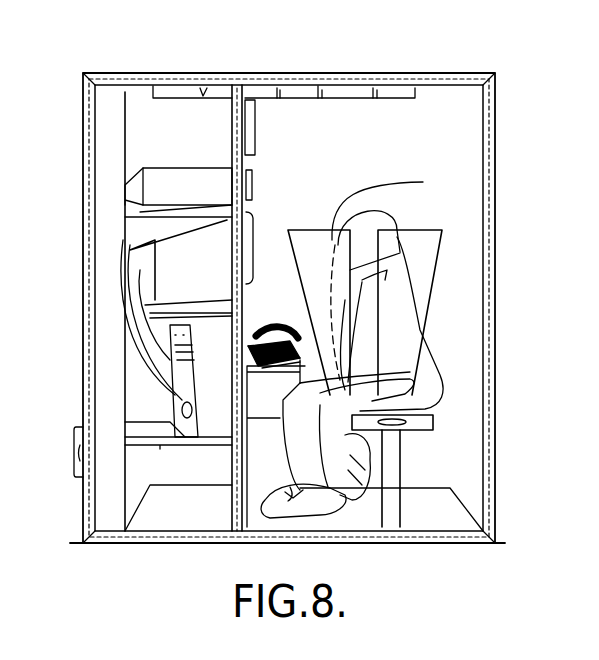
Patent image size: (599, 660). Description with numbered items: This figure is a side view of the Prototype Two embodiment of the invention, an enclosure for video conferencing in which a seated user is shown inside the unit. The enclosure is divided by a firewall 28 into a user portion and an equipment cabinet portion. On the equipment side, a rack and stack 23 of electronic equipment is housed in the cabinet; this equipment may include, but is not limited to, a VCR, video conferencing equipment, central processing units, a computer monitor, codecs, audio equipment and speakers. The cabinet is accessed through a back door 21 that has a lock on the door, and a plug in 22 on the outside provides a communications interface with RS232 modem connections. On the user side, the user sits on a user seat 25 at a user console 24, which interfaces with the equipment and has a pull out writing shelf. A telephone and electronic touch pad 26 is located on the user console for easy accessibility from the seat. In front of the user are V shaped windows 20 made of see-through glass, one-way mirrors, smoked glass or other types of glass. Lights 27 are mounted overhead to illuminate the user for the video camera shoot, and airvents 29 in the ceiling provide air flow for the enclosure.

The V shaped windows 20 is at (428, 225).
The back door 21 is at (82, 250).
The plug in 22 is at (75, 466).
The rack and stack of electronic equipment 23 is at (143, 444).
The user console 24 is at (257, 405).
The user seat 25 is at (440, 428).
The telephone and electronic touch pad 26 is at (292, 326).
The lights 27 is at (376, 96).
The firewall 28 is at (245, 85).
The airvents 29 is at (162, 90).